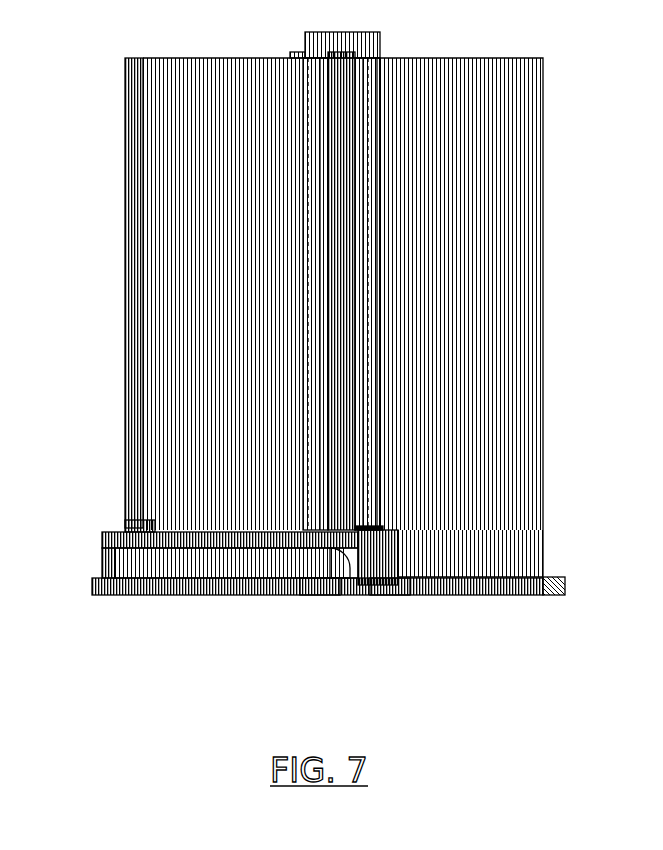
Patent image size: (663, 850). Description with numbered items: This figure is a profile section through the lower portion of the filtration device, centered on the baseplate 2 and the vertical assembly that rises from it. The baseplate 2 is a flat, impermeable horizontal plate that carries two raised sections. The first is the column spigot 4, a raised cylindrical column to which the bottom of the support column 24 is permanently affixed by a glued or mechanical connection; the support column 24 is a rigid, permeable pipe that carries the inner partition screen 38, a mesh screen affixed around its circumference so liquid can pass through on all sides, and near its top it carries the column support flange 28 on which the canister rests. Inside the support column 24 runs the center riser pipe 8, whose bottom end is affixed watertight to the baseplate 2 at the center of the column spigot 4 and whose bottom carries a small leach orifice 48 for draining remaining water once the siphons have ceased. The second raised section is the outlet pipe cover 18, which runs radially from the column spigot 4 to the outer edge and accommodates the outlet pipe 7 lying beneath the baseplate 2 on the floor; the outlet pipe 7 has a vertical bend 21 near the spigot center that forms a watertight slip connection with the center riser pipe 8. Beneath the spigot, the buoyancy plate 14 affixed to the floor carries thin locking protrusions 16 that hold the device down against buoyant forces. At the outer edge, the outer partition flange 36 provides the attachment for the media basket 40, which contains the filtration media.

The baseplate 2 is at (317, 613).
The column spigot 4 is at (423, 548).
The outlet pipe 7 is at (223, 597).
The center riser pipe 8 is at (383, 291).
The buoyancy plate 14 is at (292, 612).
The locking protrusions 16 is at (415, 613).
The outlet pipe cover 18 is at (230, 525).
The vertical bend 21 is at (395, 562).
The support column 24 is at (406, 294).
The column support flange 28 is at (380, 29).
The outer partition flange 36 is at (564, 609).
The inner partition screen 38 is at (271, 294).
The media basket 40 is at (100, 295).
The leach orifice 48 is at (413, 504).